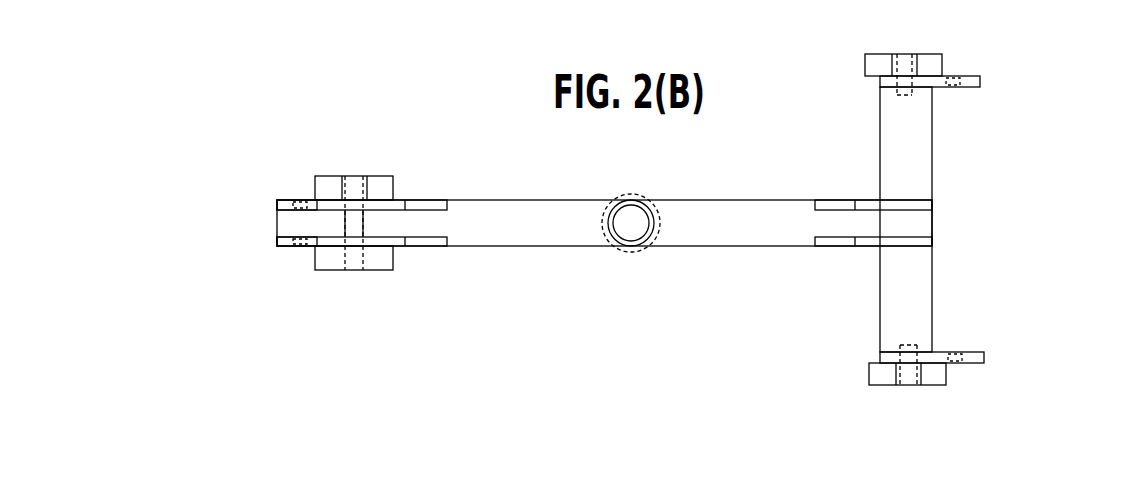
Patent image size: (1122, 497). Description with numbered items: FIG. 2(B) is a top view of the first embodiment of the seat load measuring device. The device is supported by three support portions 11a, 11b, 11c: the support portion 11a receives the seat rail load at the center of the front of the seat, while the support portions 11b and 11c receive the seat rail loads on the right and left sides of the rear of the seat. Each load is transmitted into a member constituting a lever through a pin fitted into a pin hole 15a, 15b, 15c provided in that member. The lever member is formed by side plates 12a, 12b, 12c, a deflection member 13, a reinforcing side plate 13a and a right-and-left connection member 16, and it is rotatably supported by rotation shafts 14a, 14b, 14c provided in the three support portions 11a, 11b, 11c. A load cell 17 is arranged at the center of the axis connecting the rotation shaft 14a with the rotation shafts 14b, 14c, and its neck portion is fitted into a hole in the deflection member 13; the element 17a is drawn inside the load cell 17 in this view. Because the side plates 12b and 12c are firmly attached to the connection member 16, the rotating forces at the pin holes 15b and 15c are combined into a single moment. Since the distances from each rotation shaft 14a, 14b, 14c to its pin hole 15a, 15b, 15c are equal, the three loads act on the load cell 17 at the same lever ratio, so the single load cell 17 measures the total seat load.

The support portion 11a is at (388, 184).
The support portion 11b is at (940, 57).
The support portion 11c is at (940, 375).
The side plate 12a is at (277, 204).
The side plate 12b is at (985, 82).
The side plate 12c is at (985, 357).
The deflection member 13 is at (555, 200).
The reinforcing side plate 13a is at (461, 200).
The rotation shaft 14a is at (354, 177).
The rotation shaft 14b is at (903, 55).
The rotation shaft 14c is at (905, 382).
The pin hole 15a is at (301, 204).
The pin hole 15b is at (952, 82).
The pin hole 15c is at (955, 355).
The right-and-left connection member 16 is at (917, 275).
The load cell 17 is at (632, 192).
The pin 17a is at (635, 226).